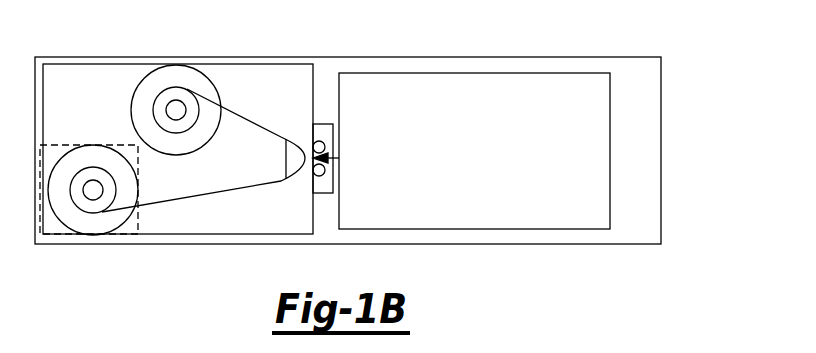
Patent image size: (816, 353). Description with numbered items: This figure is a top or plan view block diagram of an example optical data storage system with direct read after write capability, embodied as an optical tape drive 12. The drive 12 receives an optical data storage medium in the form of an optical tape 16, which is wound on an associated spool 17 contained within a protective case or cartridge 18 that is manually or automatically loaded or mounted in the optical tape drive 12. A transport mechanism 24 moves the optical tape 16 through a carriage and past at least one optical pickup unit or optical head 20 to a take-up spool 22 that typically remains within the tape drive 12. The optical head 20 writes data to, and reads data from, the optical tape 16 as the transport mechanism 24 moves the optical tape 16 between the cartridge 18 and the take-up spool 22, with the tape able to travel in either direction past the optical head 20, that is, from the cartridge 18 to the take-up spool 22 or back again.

The optical tape drive 12 is at (661, 82).
The optical tape 16 is at (207, 193).
The spool 17 is at (90, 226).
The cartridge 18 is at (106, 145).
The optical head 20 is at (610, 150).
The take-up spool 22 is at (176, 70).
The transport mechanism 24 is at (67, 82).